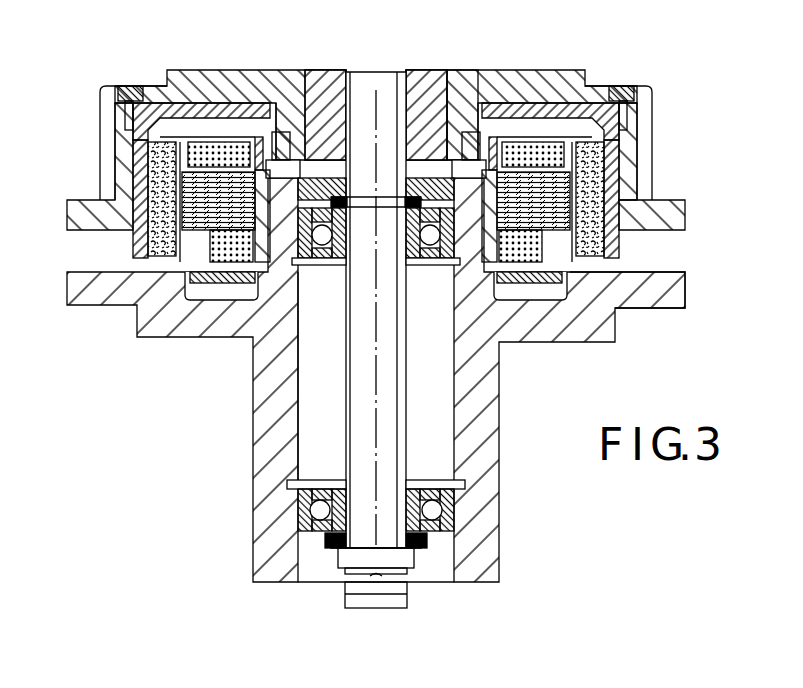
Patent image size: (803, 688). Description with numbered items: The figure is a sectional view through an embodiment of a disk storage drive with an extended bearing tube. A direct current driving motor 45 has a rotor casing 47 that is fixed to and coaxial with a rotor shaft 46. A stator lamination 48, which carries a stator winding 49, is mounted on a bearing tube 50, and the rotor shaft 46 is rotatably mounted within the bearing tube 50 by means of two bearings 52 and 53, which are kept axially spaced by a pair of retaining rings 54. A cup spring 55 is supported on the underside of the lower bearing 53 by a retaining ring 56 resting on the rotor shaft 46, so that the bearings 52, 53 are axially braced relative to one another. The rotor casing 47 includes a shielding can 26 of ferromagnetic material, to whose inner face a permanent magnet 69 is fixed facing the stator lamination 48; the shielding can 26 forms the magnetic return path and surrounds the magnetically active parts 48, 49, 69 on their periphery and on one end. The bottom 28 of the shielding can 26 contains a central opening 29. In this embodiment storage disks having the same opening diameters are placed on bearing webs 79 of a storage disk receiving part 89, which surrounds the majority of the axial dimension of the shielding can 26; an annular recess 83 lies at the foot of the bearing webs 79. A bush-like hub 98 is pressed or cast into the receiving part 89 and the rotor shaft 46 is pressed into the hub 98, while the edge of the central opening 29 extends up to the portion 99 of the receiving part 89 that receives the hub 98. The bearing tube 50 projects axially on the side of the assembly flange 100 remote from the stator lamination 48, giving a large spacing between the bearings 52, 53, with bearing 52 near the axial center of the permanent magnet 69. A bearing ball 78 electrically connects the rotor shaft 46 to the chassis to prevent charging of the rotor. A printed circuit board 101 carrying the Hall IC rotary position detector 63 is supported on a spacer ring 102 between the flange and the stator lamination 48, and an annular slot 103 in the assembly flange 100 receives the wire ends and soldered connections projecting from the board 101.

The shielding can 26 is at (138, 155).
The bottom 28 is at (221, 102).
The central opening 29 is at (481, 110).
The driving motor 45 is at (653, 59).
The rotor shaft 46 is at (363, 88).
The rotor casing 47 is at (86, 95).
The stator lamination 48 is at (597, 200).
The stator winding 49 is at (532, 140).
The bearing tube 50 is at (253, 494).
The bearing 52 is at (332, 262).
The bearing 53 is at (452, 508).
The retaining rings 54 is at (452, 264).
The cup spring 55 is at (332, 546).
The retaining ring 56 is at (410, 548).
The Hall IC 63 is at (195, 248).
The permanent magnet 69 is at (155, 185).
The bearing ball 78 is at (370, 576).
The bearing webs 79 is at (645, 146).
The annular recess 83 is at (656, 237).
The storage disk receiving part 89 is at (189, 80).
The hub 98 is at (428, 88).
The portion 99 is at (287, 88).
The assembly flange 100 is at (597, 324).
The printed circuit board 101 is at (548, 300).
The spacer ring 102 is at (296, 334).
The annular slot 103 is at (230, 292).